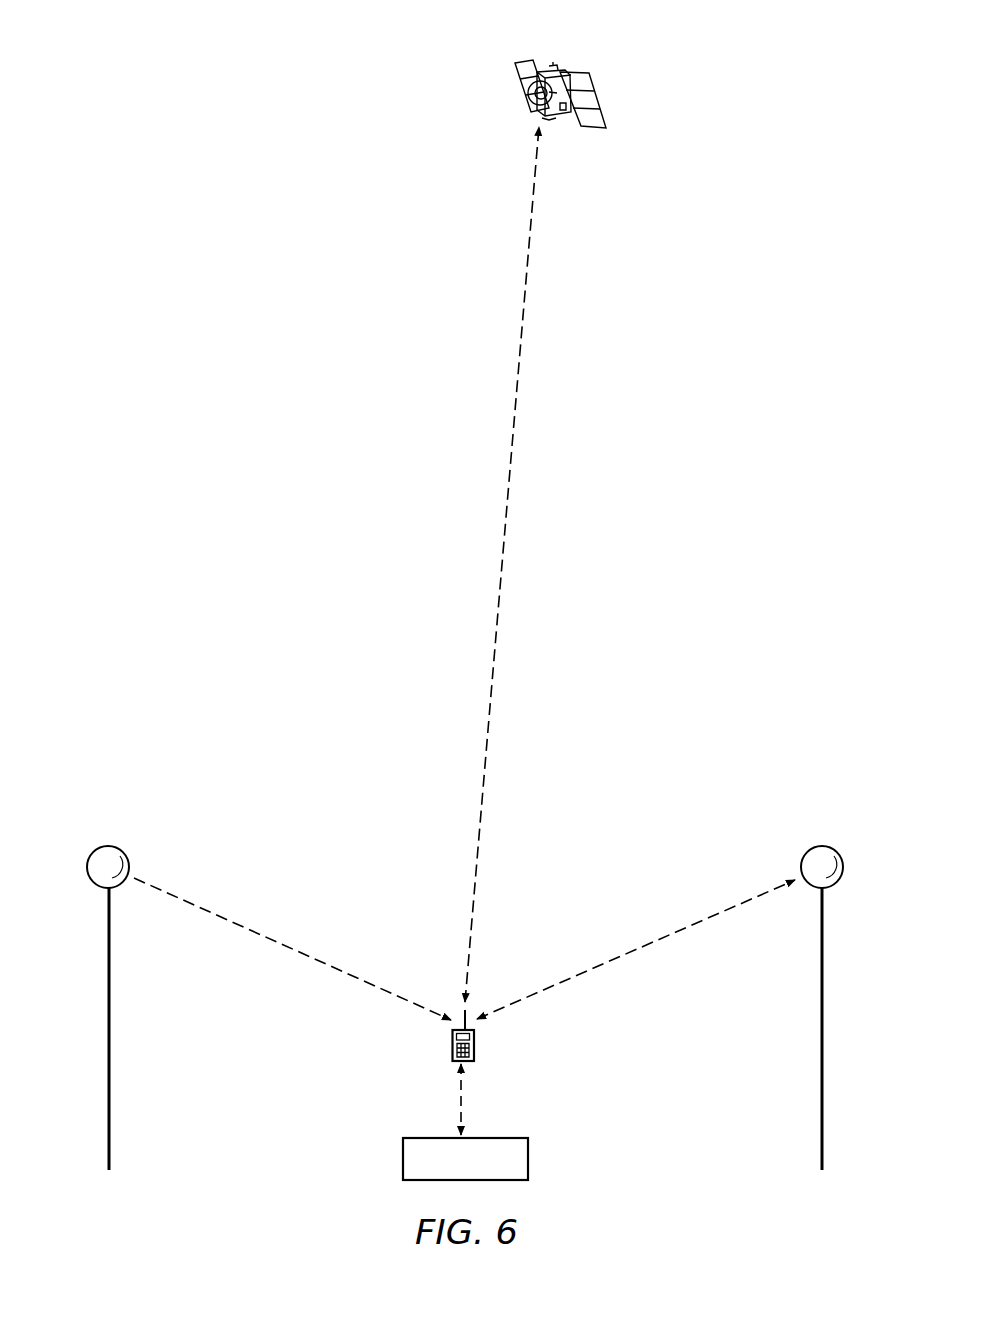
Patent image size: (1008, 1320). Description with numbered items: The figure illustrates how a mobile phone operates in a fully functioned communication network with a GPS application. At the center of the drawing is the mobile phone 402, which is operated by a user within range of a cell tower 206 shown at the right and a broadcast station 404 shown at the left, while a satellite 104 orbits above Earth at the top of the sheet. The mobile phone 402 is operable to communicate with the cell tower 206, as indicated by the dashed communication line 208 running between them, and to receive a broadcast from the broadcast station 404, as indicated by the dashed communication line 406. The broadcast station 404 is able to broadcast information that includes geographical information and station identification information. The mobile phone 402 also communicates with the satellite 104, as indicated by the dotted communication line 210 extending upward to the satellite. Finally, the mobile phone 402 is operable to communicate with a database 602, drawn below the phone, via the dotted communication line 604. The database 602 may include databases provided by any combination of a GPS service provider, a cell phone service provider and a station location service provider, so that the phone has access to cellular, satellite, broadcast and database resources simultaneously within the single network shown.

The satellite 104 is at (548, 67).
The dotted communication line 210 is at (508, 487).
The dashed communication line 406 is at (298, 951).
The dashed communication line 208 is at (632, 950).
The mobile phone 402 is at (475, 1047).
The broadcast station 404 is at (108, 1032).
The cell tower 206 is at (823, 1032).
The dotted communication line 604 is at (462, 1100).
The database 602 is at (529, 1157).